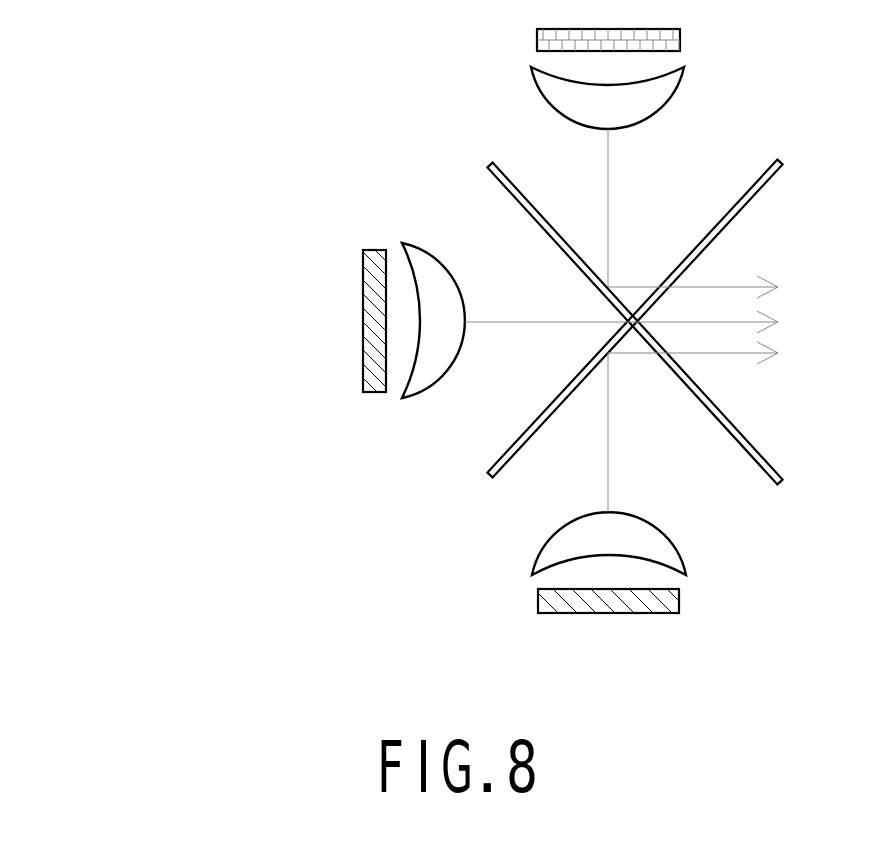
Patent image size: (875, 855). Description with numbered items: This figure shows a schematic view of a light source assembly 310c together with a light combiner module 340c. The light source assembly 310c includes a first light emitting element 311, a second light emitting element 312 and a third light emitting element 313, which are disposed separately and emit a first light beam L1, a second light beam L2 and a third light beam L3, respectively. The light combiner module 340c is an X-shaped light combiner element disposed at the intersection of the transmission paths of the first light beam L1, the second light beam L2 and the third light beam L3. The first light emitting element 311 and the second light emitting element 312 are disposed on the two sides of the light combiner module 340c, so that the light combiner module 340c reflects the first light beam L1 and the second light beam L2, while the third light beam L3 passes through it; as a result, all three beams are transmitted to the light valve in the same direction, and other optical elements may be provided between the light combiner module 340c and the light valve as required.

The light source assembly 310c is at (154, 268).
The first light emitting element 311 is at (537, 597).
The second light emitting element 312 is at (537, 40).
The third light emitting element 313 is at (363, 327).
The light combiner module 340c is at (770, 172).
The first light beam L1 is at (608, 402).
The second light beam L2 is at (608, 203).
The third light beam L3 is at (542, 321).